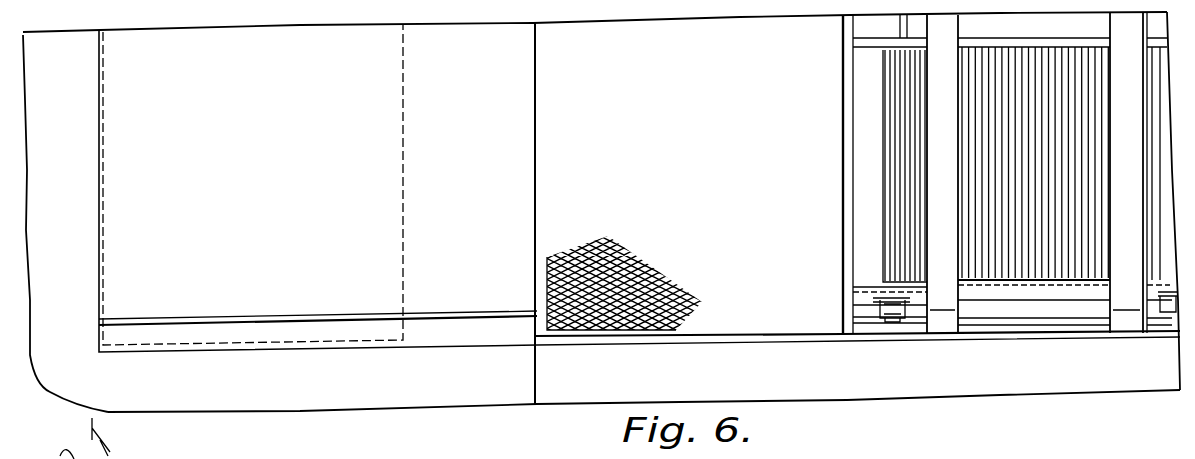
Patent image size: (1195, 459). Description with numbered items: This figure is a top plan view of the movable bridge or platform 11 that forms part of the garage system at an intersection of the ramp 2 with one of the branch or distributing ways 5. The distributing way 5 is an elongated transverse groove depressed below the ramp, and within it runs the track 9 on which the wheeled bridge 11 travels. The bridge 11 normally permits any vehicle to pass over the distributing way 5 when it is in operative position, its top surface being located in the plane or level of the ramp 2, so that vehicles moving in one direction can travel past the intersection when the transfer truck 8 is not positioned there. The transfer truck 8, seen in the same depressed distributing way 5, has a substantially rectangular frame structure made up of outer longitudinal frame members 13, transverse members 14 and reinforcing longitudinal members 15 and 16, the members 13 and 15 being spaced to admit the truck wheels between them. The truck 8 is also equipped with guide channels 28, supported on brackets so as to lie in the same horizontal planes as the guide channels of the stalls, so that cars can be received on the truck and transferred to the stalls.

The ramp 2 is at (857, 214).
The distributing way 5 is at (318, 188).
The transfer truck 8 is at (896, 322).
The track 9 is at (458, 319).
The movable bridge 11 is at (742, 320).
The outer longitudinal frame member 13 is at (1057, 327).
The transverse member 14 is at (843, 138).
The reinforcing longitudinal member 15 is at (885, 268).
The reinforcing longitudinal member 16 is at (866, 24).
The guide channel 28 is at (953, 322).